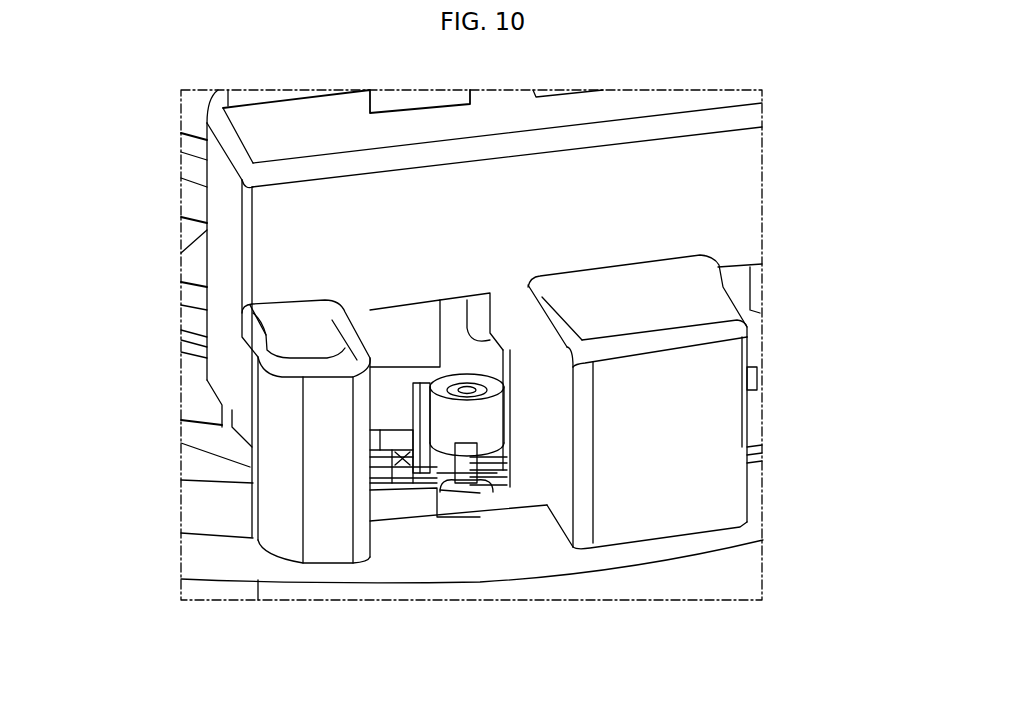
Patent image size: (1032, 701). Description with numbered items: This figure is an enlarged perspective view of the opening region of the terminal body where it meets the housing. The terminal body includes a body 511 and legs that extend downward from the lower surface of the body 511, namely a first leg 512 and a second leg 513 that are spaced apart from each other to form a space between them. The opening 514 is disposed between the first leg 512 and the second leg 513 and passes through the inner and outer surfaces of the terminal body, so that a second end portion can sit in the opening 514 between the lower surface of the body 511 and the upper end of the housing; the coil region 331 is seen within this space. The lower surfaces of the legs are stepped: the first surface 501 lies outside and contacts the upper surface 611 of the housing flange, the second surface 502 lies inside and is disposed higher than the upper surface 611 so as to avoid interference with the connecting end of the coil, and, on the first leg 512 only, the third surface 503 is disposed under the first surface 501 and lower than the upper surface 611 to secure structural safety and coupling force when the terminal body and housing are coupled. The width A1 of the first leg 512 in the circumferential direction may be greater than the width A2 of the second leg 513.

The body 511 is at (713, 198).
The first leg 512 is at (715, 408).
The second leg 513 is at (330, 543).
The second surface 502 is at (480, 352).
The opening 514 is at (540, 428).
The spool / roller 331 is at (465, 467).
The third surface 503 is at (520, 500).
The first surface 501 is at (553, 523).
The upper surface 611 is at (457, 540).
The width of the first leg A1 is at (547, 507).
The width of the second leg A2 is at (260, 547).